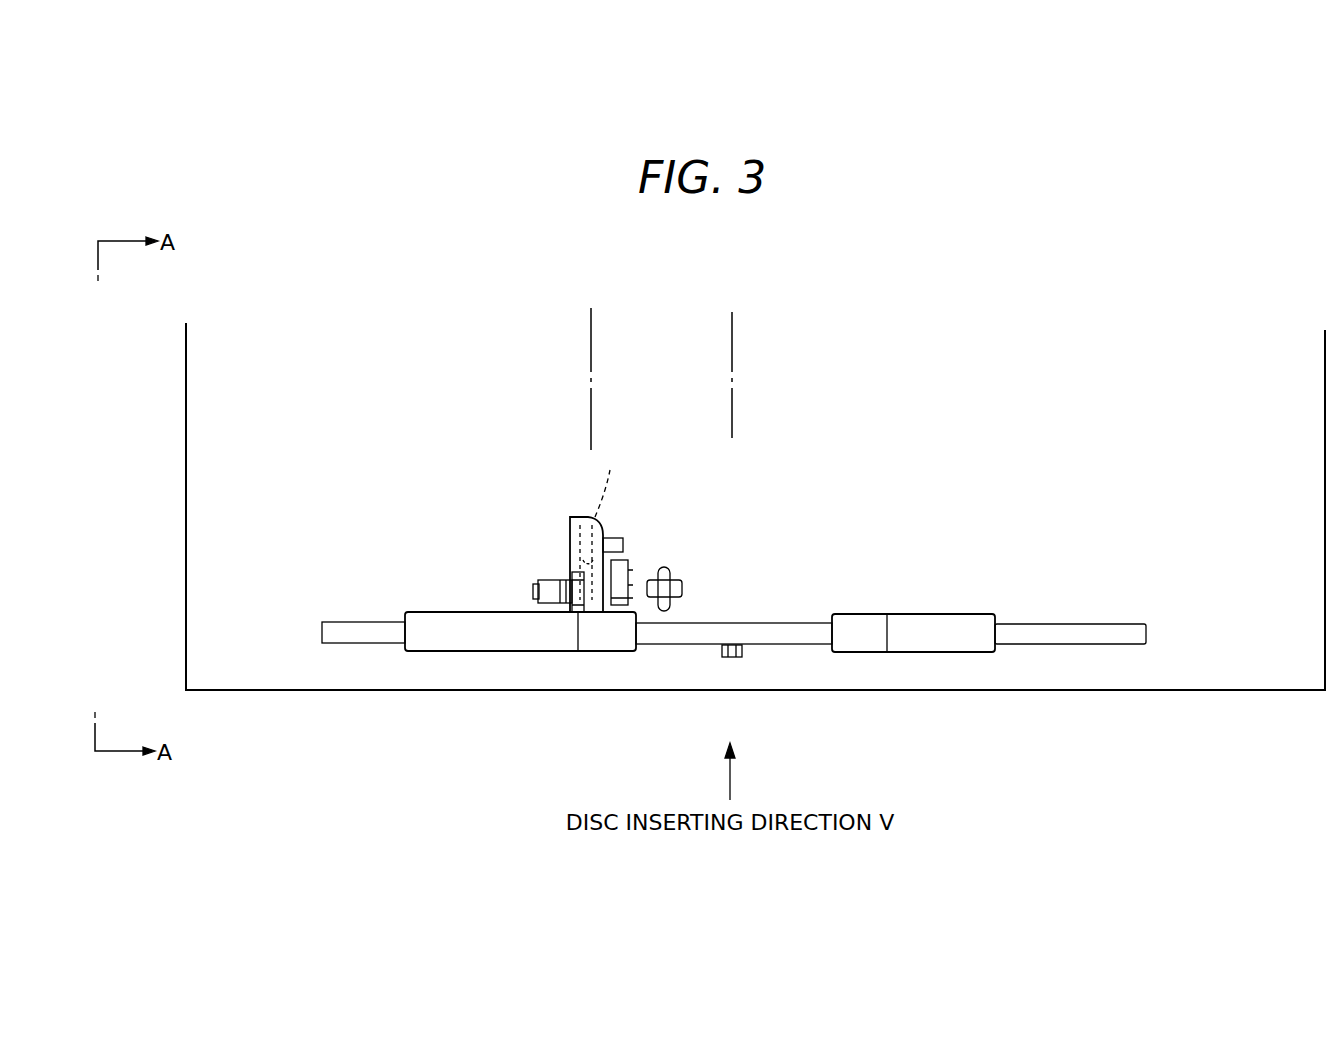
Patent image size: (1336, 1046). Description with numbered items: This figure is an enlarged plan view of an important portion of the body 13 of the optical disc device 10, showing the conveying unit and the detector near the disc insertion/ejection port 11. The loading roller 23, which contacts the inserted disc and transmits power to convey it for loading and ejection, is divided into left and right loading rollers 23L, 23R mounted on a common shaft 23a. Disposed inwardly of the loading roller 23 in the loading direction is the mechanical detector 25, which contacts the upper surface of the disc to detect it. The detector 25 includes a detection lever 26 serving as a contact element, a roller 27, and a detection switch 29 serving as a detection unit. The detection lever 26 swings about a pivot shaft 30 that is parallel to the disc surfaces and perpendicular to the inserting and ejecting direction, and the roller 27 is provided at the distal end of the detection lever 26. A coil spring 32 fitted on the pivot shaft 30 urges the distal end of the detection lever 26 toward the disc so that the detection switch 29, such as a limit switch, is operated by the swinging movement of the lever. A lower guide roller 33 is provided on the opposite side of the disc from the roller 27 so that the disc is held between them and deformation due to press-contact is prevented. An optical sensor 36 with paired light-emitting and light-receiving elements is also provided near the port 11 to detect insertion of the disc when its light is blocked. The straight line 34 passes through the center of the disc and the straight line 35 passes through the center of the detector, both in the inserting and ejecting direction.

The optical disc device 10 is at (160, 539).
The disc insertion/ejection port 11 is at (1233, 692).
The body 13 is at (186, 419).
The loading roller 23 is at (958, 603).
The common shaft 23a is at (1081, 623).
The left loading roller 23L is at (500, 651).
The right loading roller 23R is at (937, 652).
The detector 25 is at (576, 508).
The detection lever 26 is at (606, 540).
The roller 27 is at (612, 480).
The detection switch 29 is at (622, 558).
The pivot shaft 30 is at (546, 590).
The coil spring 32 is at (575, 583).
The lower guide roller 33 is at (677, 572).
The straight line passing through the center of the disc 34 is at (735, 346).
The straight line passing through the center of the detector 35 is at (590, 347).
The optical sensor 36 is at (745, 655).